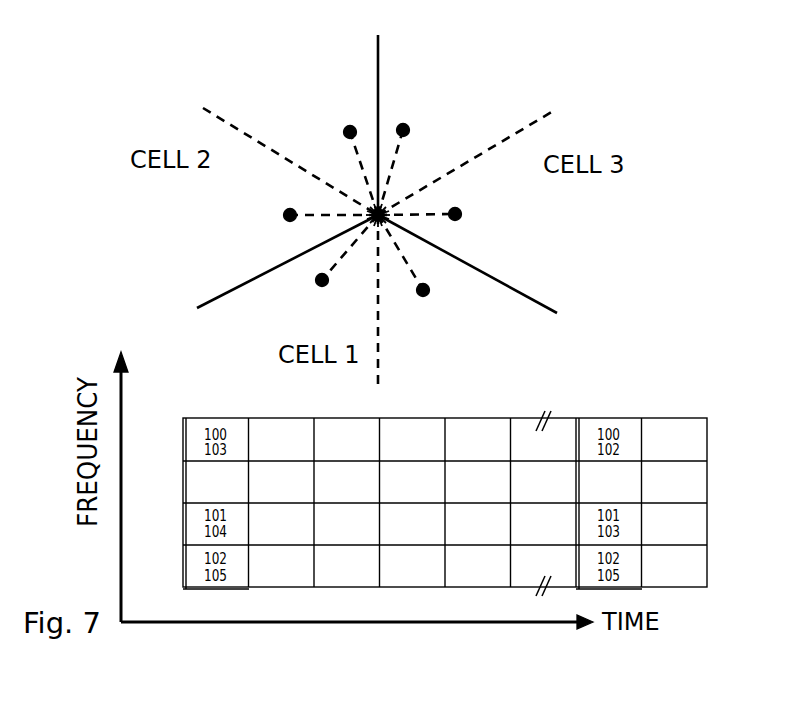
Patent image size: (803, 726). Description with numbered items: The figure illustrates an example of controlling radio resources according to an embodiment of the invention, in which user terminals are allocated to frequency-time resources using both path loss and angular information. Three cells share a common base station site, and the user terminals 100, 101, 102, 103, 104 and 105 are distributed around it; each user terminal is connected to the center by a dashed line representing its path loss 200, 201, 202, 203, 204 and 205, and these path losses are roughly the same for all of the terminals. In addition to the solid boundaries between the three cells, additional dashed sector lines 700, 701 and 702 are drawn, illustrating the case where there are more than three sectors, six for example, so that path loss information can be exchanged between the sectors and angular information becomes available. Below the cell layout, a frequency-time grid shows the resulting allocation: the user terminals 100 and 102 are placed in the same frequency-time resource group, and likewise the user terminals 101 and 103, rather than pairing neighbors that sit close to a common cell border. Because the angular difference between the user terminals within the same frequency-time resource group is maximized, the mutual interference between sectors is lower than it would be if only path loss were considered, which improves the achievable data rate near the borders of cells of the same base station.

The user terminal 100 is at (316, 283).
The user terminal 101 is at (284, 216).
The user terminal 102 is at (344, 133).
The user terminal 103 is at (406, 124).
The user terminal 104 is at (462, 209).
The user terminal 105 is at (429, 287).
The path loss 200 is at (340, 259).
The path loss 201 is at (340, 212).
The path loss 202 is at (357, 150).
The path loss 203 is at (398, 148).
The path loss 204 is at (426, 213).
The path loss 205 is at (407, 263).
The additional dashed sector line 700 is at (284, 157).
The additional dashed sector line 701 is at (493, 148).
The additional dashed sector line 702 is at (379, 316).